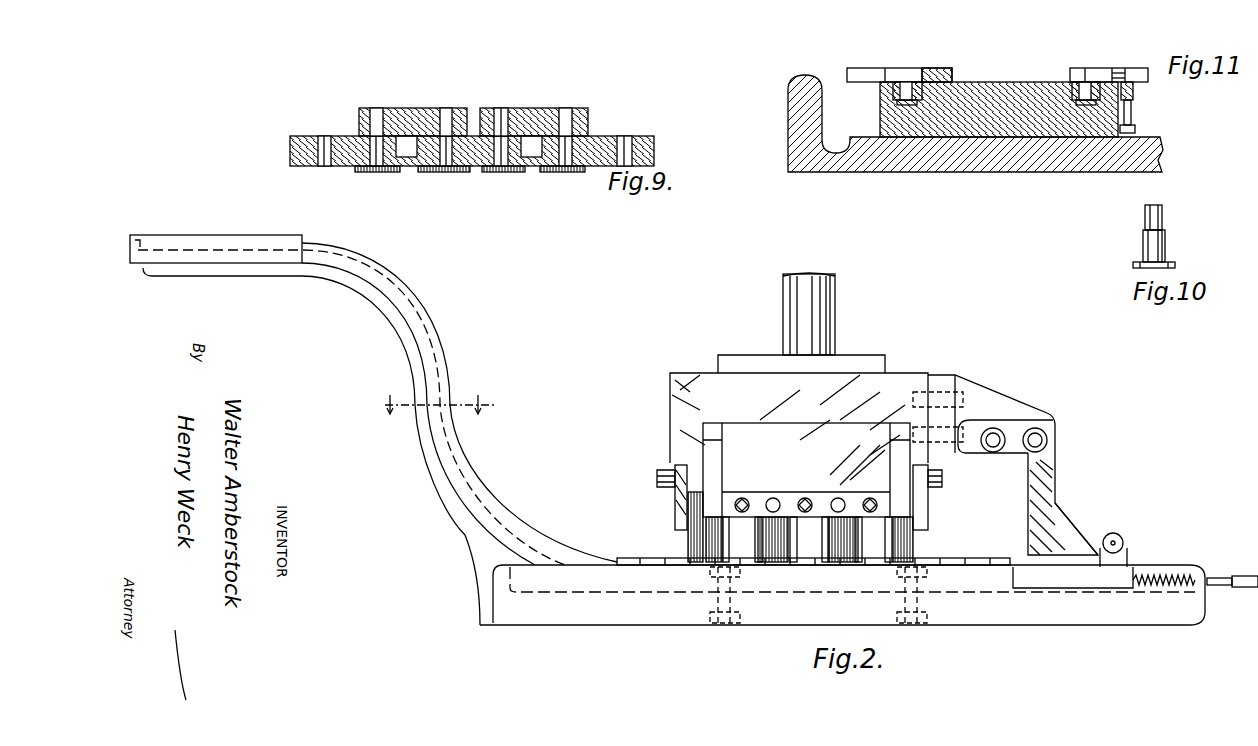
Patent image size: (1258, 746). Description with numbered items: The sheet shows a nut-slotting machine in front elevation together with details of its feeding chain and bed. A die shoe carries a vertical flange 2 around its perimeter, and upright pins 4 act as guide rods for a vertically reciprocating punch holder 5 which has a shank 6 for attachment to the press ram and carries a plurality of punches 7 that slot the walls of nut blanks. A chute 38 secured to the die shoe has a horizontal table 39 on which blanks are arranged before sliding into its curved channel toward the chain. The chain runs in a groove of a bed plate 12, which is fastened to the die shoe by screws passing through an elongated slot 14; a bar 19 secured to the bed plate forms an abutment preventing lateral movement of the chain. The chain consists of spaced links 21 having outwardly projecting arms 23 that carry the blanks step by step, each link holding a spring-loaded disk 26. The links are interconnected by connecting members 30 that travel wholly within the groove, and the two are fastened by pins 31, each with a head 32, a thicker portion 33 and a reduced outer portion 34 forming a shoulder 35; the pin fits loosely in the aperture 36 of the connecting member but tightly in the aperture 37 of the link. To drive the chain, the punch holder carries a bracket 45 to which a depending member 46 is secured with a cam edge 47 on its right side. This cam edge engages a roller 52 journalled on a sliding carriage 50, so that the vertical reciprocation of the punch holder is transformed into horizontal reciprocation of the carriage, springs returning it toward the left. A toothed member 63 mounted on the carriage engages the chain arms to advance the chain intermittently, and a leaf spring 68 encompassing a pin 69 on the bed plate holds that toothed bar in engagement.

In FIG. 11, the vertical flange 2 is at (808, 76).
In FIG. 2, the vertical flange 2 is at (1207, 572).
In FIG. 2, the upright pins 4 is at (690, 543).
In FIG. 2, the punch holder 5 is at (846, 366).
In FIG. 2, the shank 6 is at (836, 284).
In FIG. 2, the punches 7 is at (756, 522).
In FIG. 11, the bed plate 12 is at (995, 88).
In FIG. 2, the transverse elongated slot 14 is at (438, 414).
In FIG. 11, the bar 19 is at (943, 68).
In FIG. 9, the links 21 is at (415, 110).
In FIG. 11, the links 21 is at (915, 68).
In FIG. 11, the outwardly projecting arms 23 is at (866, 74).
In FIG. 11, the disk 26 is at (1120, 80).
In FIG. 9, the connecting members 30 is at (478, 152).
In FIG. 11, the connecting members 30 is at (885, 92).
In FIG. 10, the pins 31 is at (1165, 247).
In FIG. 9, the head 32 is at (555, 170).
In FIG. 10, the head 32 is at (1176, 266).
In FIG. 9, the thicker portion 33 is at (498, 152).
In FIG. 10, the thicker portion 33 is at (1143, 245).
In FIG. 9, the reduced outer portion 34 is at (502, 112).
In FIG. 10, the reduced outer portion 34 is at (1163, 212).
In FIG. 10, the shoulder 35 is at (1147, 215).
In FIG. 9, the aperture 36 is at (628, 140).
In FIG. 9, the aperture 37 is at (390, 110).
In FIG. 2, the chute 38 is at (432, 340).
In FIG. 2, the horizontal table 39 is at (232, 237).
In FIG. 2, the bracket 45 is at (998, 407).
In FIG. 2, the depending member 46 is at (1046, 487).
In FIG. 2, the cam edge 47 is at (1066, 532).
In FIG. 2, the carriage 50 is at (1240, 578).
In FIG. 2, the roller 52 is at (1125, 536).
In FIG. 11, the member 63 is at (1134, 92).
In FIG. 11, the leaf spring 68 is at (1132, 114).
In FIG. 11, the pin 69 is at (1136, 129).